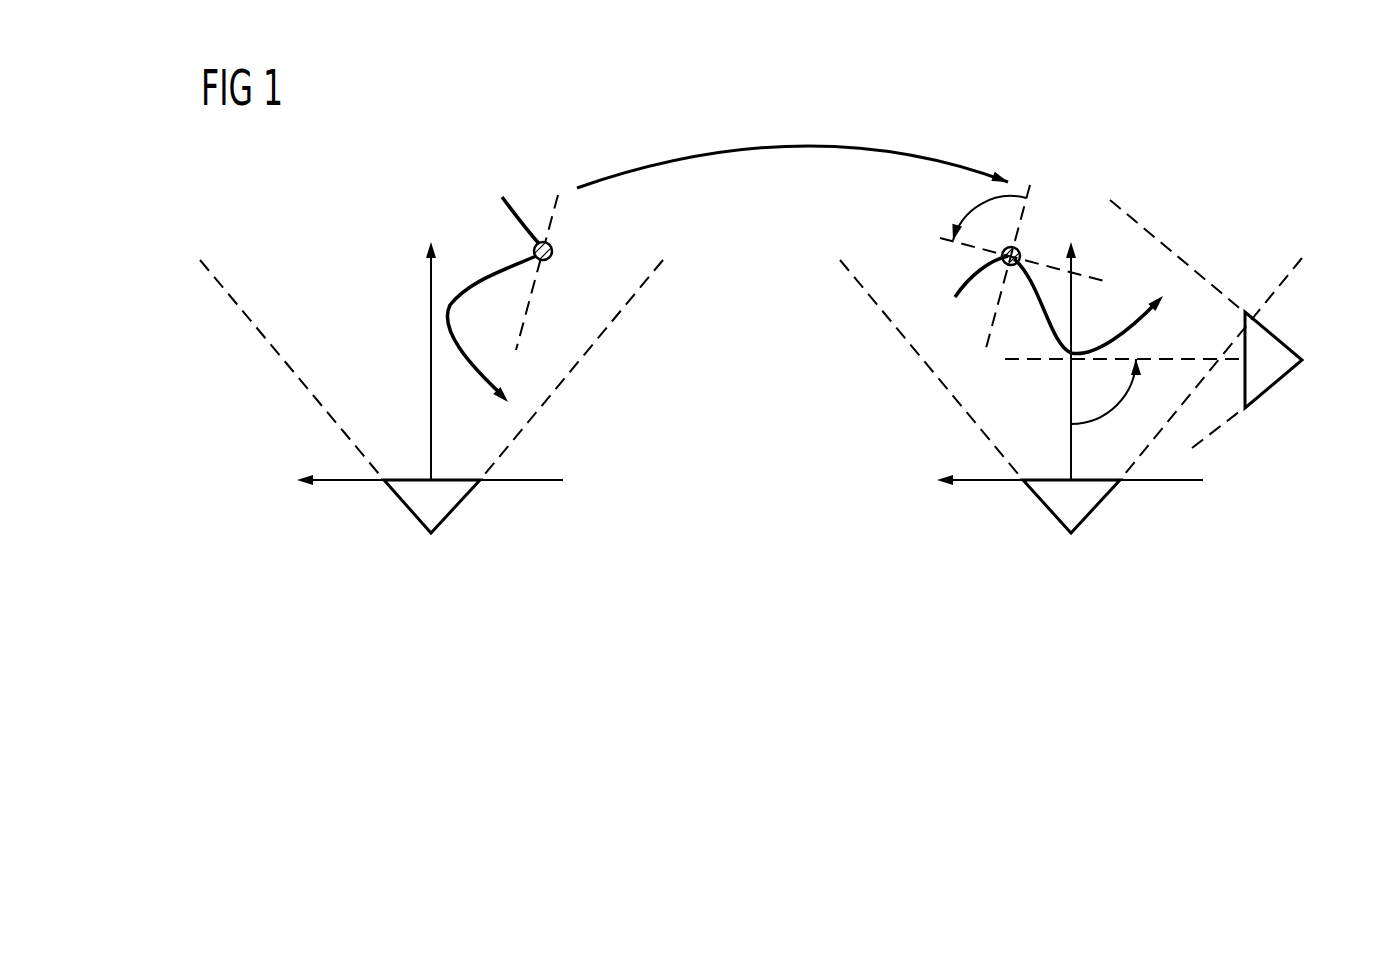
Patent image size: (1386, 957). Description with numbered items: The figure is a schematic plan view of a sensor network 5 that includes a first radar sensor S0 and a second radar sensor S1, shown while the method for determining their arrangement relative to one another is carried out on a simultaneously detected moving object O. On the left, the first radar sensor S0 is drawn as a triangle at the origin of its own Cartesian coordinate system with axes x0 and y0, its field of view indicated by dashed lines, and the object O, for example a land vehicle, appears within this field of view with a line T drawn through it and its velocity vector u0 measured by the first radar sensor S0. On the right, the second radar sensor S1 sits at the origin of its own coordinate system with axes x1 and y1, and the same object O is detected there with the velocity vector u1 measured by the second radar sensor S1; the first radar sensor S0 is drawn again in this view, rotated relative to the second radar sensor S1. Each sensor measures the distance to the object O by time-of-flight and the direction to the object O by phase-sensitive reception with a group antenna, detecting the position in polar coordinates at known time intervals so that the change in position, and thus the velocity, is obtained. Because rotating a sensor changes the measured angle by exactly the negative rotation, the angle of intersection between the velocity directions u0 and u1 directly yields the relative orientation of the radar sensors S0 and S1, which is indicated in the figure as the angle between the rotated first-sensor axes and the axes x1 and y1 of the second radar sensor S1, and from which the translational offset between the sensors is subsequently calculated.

The sensor network 5 is at (1160, 126).
The first radar sensor S0 is at (447, 505).
The second radar sensor S1 is at (1087, 507).
The object O is at (552, 257).
The object trajectory T is at (553, 215).
The velocity vector measured by the first radar sensor u0 is at (782, 268).
The velocity vector measured by the second radar sensor u1 is at (1024, 255).
The x coordinate axis of the first radar sensor x0 is at (415, 360).
The y coordinate axis of the first radar sensor y0 is at (430, 496).
The x coordinate axis of the second radar sensor x1 is at (1084, 360).
The y coordinate axis of the second radar sensor y1 is at (1070, 496).